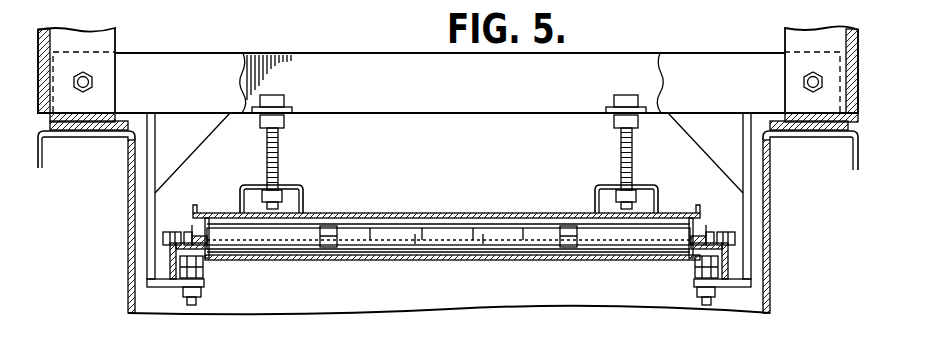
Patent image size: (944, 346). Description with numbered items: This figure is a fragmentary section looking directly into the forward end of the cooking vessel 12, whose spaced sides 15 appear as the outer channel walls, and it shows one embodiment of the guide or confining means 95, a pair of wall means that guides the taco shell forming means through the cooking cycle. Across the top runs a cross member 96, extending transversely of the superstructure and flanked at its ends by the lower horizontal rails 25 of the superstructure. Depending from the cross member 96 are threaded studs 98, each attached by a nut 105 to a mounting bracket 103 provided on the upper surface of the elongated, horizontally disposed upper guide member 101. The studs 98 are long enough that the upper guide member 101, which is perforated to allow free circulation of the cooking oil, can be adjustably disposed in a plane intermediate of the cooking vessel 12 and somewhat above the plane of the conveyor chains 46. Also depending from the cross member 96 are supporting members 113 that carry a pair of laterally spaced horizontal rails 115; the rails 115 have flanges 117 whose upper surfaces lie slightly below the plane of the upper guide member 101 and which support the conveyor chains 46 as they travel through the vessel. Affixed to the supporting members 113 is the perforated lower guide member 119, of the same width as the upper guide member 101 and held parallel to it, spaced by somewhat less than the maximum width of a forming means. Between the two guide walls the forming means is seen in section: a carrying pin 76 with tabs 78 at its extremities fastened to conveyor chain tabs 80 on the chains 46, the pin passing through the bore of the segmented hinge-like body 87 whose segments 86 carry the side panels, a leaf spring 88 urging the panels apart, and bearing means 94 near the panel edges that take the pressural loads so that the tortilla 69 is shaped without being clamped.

The cooking vessel 12 is at (122, 278).
The sides 15 is at (128, 192).
The lower horizontal rail 25 is at (50, 50).
The conveyor chain 46 is at (170, 232).
The tortilla 69 is at (387, 223).
The carrying pin 76 is at (197, 235).
The tab 78 is at (186, 231).
The conveyor chain tab 80 is at (196, 256).
The segment 86 is at (483, 242).
The segmented hinge-like body 87 is at (511, 231).
The leaf spring 88 is at (329, 248).
The bearing means 94 is at (210, 213).
The confining means 95 is at (446, 223).
The cross member 96 is at (257, 64).
The threaded stud 98 is at (279, 146).
The upper guide member 101 is at (356, 213).
The mounting bracket 103 is at (285, 187).
The nut 105 is at (299, 198).
The supporting member 113 is at (152, 152).
The rail 115 is at (183, 287).
The flange 117 is at (167, 251).
The lower guide member 119 is at (399, 260).